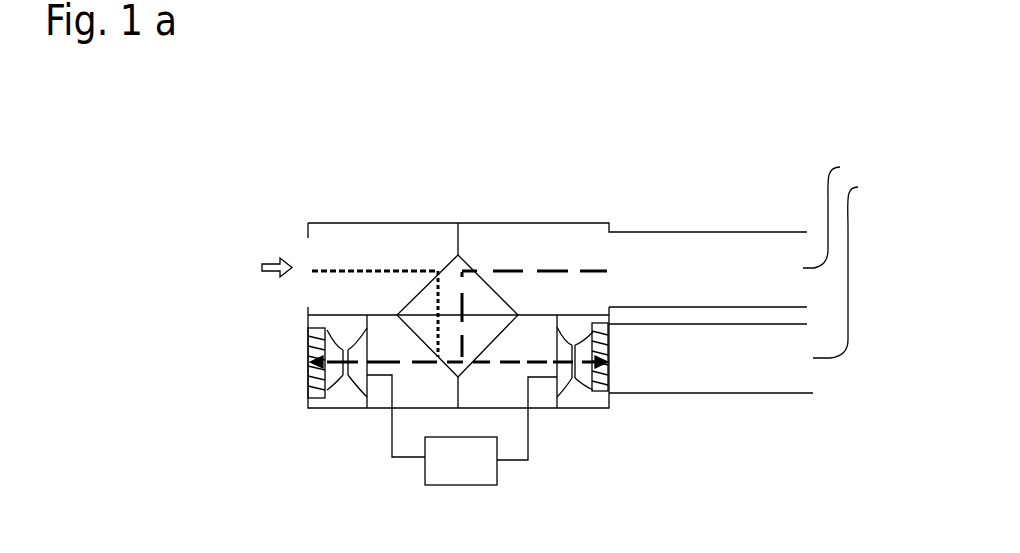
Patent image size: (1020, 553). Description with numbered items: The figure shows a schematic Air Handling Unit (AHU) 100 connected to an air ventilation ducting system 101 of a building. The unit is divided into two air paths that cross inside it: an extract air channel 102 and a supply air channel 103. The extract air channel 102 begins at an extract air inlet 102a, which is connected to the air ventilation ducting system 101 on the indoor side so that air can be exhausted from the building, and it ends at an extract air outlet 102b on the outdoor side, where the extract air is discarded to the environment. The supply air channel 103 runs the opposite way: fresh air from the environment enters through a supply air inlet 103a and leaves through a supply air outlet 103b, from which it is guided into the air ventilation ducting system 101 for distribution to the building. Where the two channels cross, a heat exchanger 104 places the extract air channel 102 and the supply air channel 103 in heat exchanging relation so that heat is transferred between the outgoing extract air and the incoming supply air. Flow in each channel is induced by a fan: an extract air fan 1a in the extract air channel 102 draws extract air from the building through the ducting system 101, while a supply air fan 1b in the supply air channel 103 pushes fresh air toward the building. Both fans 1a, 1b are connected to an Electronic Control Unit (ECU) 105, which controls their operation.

The Air Handling Unit 100 is at (635, 117).
The air ventilation ducting system 101 is at (751, 274).
The extract air channel 102 is at (555, 253).
The extract air inlet 102a is at (613, 270).
The extract air outlet 102b is at (302, 388).
The supply air channel 103 is at (358, 253).
The supply air inlet 103a is at (300, 255).
The supply air outlet 103b is at (618, 387).
The heat exchanger 104 is at (437, 270).
The Electronic Control Unit 105 is at (462, 430).
The extract air fan 1a is at (337, 382).
The supply air fan 1b is at (565, 383).